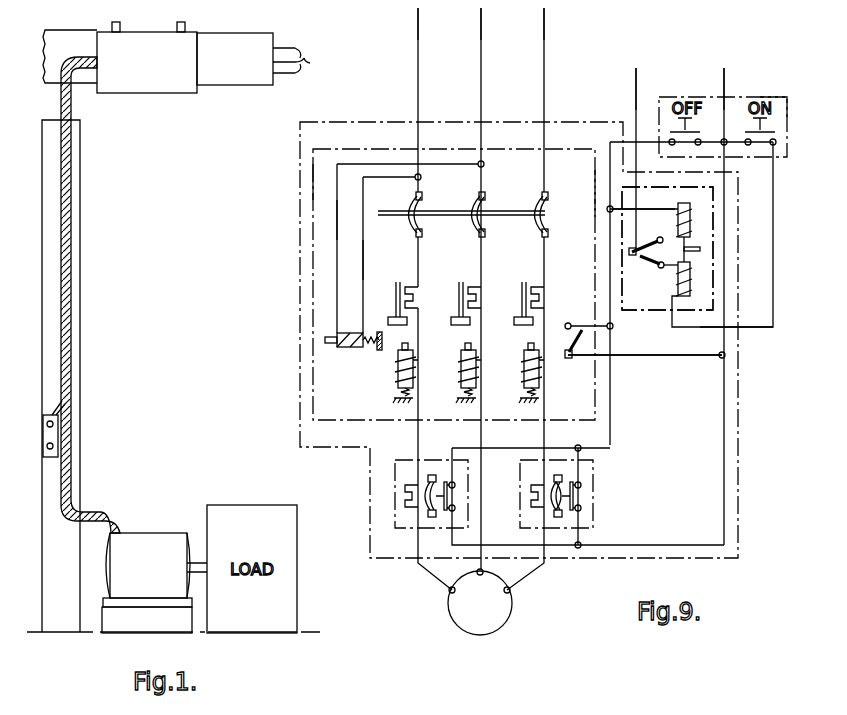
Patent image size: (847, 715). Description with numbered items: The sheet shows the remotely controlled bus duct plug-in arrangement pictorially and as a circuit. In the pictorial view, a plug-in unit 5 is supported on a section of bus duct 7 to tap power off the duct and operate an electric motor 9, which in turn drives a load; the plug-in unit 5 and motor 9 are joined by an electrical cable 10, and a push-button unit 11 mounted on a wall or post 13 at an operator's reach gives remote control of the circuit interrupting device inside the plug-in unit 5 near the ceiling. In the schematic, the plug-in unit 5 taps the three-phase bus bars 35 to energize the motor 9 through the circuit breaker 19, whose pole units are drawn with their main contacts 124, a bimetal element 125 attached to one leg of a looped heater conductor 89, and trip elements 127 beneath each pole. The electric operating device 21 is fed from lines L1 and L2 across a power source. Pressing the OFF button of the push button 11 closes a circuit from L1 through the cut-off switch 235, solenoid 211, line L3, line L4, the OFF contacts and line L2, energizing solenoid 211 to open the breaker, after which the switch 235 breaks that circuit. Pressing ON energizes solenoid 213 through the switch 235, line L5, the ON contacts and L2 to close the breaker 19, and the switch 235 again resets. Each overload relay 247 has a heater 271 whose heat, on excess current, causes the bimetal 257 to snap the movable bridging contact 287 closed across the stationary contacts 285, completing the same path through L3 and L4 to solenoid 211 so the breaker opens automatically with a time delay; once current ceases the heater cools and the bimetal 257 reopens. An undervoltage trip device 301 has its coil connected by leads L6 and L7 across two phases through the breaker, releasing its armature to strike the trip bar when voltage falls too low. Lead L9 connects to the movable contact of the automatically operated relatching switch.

In FIG. 1, the plug-in unit 5 is at (151, 72).
In FIG. 9, the plug-in unit 5 is at (368, 121).
In FIG. 1, the bus duct 7 is at (238, 69).
In FIG. 1, the three-phase bus bars 35 is at (302, 60).
In FIG. 9, the three-phase bus bars 35 is at (544, 33).
In FIG. 1, the electrical cable 10 is at (70, 230).
In FIG. 1, the wall or post 13 is at (48, 360).
In FIG. 1, the push-button unit 11 is at (43, 430).
In FIG. 9, the push-button unit 11 is at (777, 101).
In FIG. 1, the electric motor 9 is at (149, 574).
In FIG. 9, the electric motor 9 is at (488, 612).
In FIG. 9, the circuit breaker 19 is at (313, 183).
In FIG. 9, the lead L6 is at (337, 220).
In FIG. 9, the lead L7 is at (363, 259).
In FIG. 9, the main contacts 124 is at (375, 270).
In FIG. 9, the bimetal element 125 is at (396, 315).
In FIG. 9, the looped heater conductor 89 is at (418, 297).
In FIG. 9, the undervoltage trip device 301 is at (352, 378).
In FIG. 9, the overload relay coils 127 is at (575, 403).
In FIG. 9, the line L1 is at (636, 87).
In FIG. 9, the line L2 is at (724, 85).
In FIG. 9, the line L4 is at (597, 196).
In FIG. 9, the line L3 is at (642, 208).
In FIG. 9, the solenoid 211 is at (676, 219).
In FIG. 9, the cut-off switch 235 is at (647, 258).
In FIG. 9, the solenoid 213 is at (676, 289).
In FIG. 9, the electric operating device 21 is at (650, 310).
In FIG. 9, the line L5 is at (752, 332).
In FIG. 9, the lead L9 is at (670, 356).
In FIG. 9, the overload relays 247 is at (428, 461).
In FIG. 9, the heater 271 is at (412, 482).
In FIG. 9, the stationary contacts 285 is at (455, 507).
In FIG. 9, the movable bridging contact 287 is at (445, 512).
In FIG. 9, the bimetal 257 is at (550, 507).